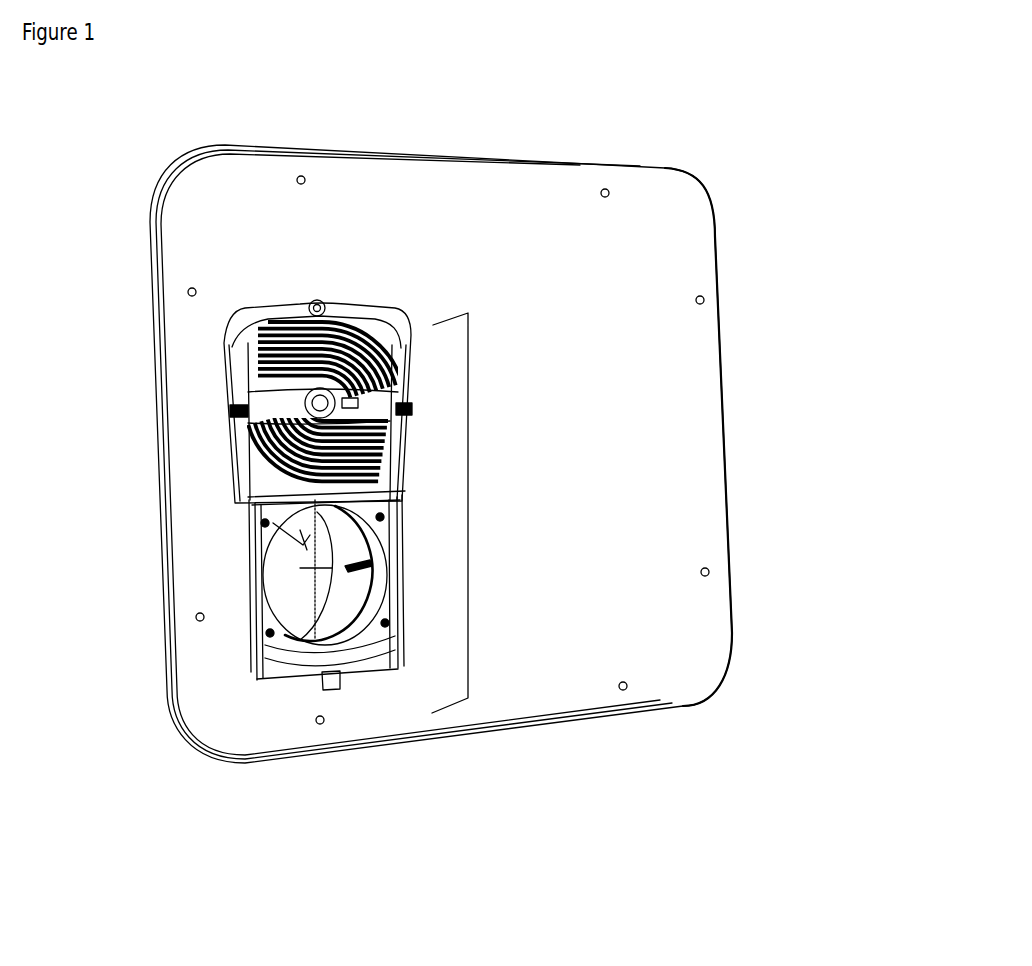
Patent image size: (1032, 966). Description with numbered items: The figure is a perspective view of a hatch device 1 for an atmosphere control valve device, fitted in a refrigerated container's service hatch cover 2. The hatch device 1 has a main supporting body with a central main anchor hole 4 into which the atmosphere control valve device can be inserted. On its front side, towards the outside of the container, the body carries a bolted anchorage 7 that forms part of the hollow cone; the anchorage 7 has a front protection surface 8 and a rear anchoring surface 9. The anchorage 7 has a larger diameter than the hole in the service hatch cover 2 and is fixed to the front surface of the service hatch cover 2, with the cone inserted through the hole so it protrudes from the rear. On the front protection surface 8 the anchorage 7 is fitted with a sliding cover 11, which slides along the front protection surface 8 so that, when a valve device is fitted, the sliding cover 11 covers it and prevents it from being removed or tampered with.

The hatch device 1 is at (468, 553).
The service hatch cover 2 is at (523, 410).
The main anchor hole 4 is at (347, 640).
The anchorage 7 is at (294, 687).
The front protection surface 8 is at (400, 637).
The rear anchoring surface 9 is at (260, 670).
The sliding cover 11 is at (378, 318).